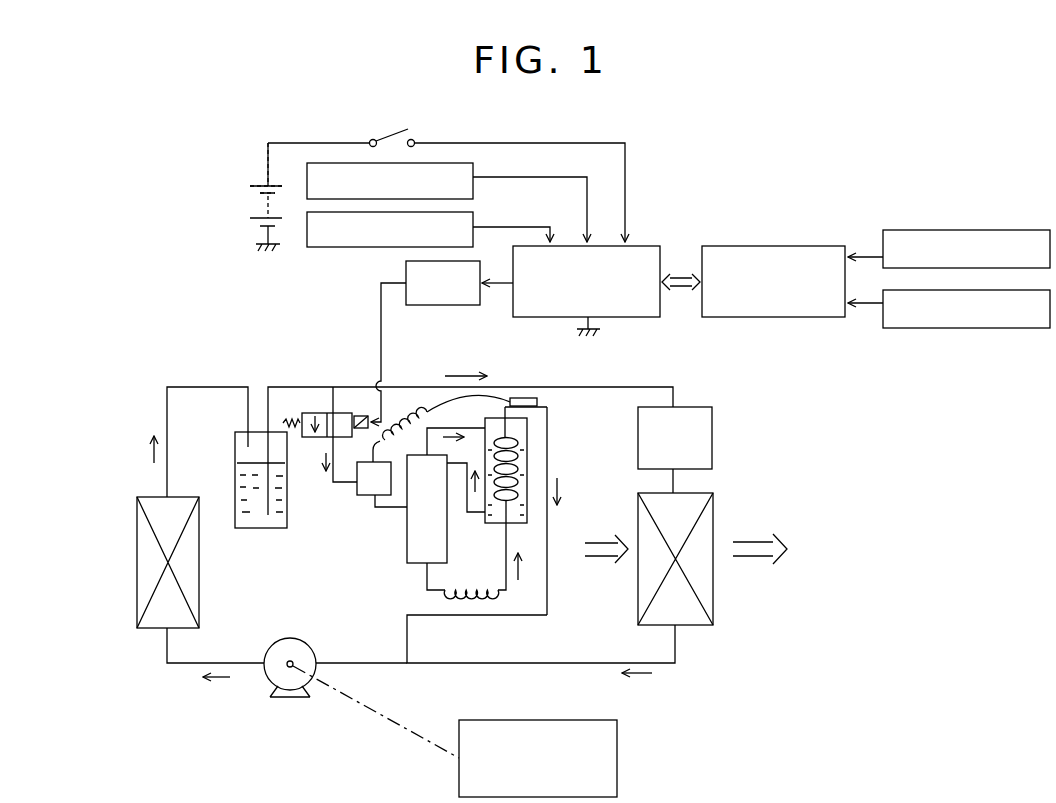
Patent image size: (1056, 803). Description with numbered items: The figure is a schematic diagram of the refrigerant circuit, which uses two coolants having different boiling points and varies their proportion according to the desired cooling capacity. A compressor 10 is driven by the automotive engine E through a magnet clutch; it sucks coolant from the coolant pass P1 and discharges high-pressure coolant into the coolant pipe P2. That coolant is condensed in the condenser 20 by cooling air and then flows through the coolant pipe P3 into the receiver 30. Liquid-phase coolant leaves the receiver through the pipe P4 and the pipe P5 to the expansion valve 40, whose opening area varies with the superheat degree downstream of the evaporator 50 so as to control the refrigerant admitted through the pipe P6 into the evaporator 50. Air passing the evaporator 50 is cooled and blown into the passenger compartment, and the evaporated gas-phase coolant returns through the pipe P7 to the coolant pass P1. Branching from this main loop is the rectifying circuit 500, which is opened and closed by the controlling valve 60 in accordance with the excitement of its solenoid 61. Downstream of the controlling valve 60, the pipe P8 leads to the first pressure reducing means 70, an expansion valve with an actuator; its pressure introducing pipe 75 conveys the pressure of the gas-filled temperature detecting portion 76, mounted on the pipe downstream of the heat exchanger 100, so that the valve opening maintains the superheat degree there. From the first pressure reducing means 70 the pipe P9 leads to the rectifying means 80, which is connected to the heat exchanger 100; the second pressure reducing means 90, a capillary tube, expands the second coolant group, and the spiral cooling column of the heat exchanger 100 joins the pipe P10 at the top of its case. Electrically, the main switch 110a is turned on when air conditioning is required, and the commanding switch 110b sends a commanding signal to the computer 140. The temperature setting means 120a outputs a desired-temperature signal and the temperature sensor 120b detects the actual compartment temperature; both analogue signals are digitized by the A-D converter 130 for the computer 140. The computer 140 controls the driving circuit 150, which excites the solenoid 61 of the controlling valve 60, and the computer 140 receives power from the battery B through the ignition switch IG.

The compressor 10 is at (274, 676).
The condenser 20 is at (137, 560).
The receiver 30 is at (262, 528).
The expansion valve 40 is at (697, 407).
The evaporator 50 is at (697, 625).
The controlling valve 60 is at (320, 410).
The solenoid 61 is at (365, 411).
The first pressure reducing means 70 is at (364, 497).
The pressure introducing pipe 75 is at (437, 407).
The temperature detecting portion 76 is at (523, 398).
The rectifying means 80 is at (405, 565).
The second pressure reducing means 90 is at (464, 588).
The heat exchanger 100 is at (527, 450).
The main switch 110a is at (464, 163).
The commanding switch 110b is at (333, 247).
The temperature setting means 120a is at (975, 328).
The temperature sensor 120b is at (985, 230).
The A-D converter 130 is at (790, 245).
The computer 140 is at (651, 245).
The driving circuit 150 is at (450, 305).
The rectifying circuit 500 is at (400, 512).
The battery B is at (250, 206).
The ignition switch IG is at (399, 129).
The automotive engine E is at (617, 758).
The coolant pass P1 is at (340, 663).
The coolant pipe P2 is at (221, 663).
The coolant pipe P3 is at (180, 387).
The pipe P4 is at (292, 387).
The pipe P5 is at (625, 387).
The pipe P6 is at (676, 478).
The pipe P7 is at (470, 663).
The pipe P8 is at (337, 407).
The pipe P9 is at (385, 509).
The pipe P10 is at (548, 590).